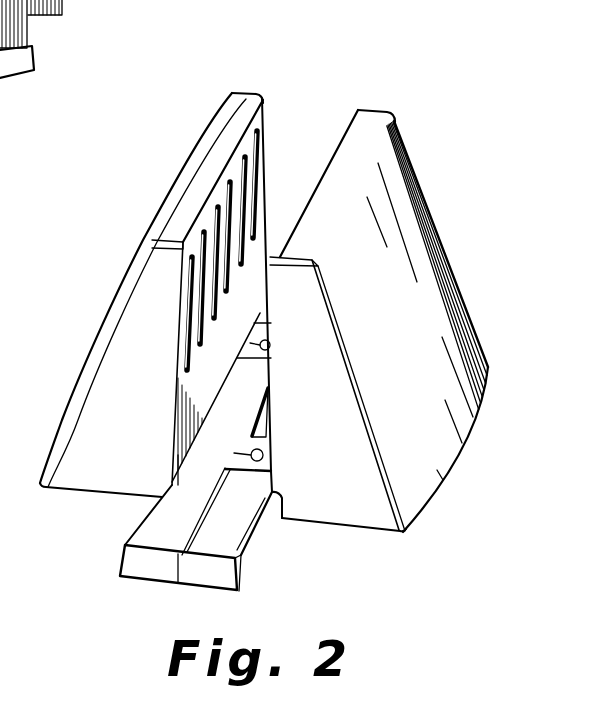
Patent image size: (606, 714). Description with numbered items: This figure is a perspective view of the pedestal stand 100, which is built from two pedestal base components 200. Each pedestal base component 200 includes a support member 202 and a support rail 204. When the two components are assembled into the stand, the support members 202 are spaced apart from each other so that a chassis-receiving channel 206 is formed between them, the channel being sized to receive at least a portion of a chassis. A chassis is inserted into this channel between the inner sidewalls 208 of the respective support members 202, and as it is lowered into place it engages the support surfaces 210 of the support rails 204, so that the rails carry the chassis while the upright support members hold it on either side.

The pedestal stand 100 is at (484, 139).
The pedestal base component 200 is at (118, 277).
The support member 202 is at (113, 387).
The support rail 204 is at (158, 533).
The chassis-receiving channel 206 is at (303, 64).
The inner sidewall 208 is at (268, 250).
The support surface 210 is at (178, 499).